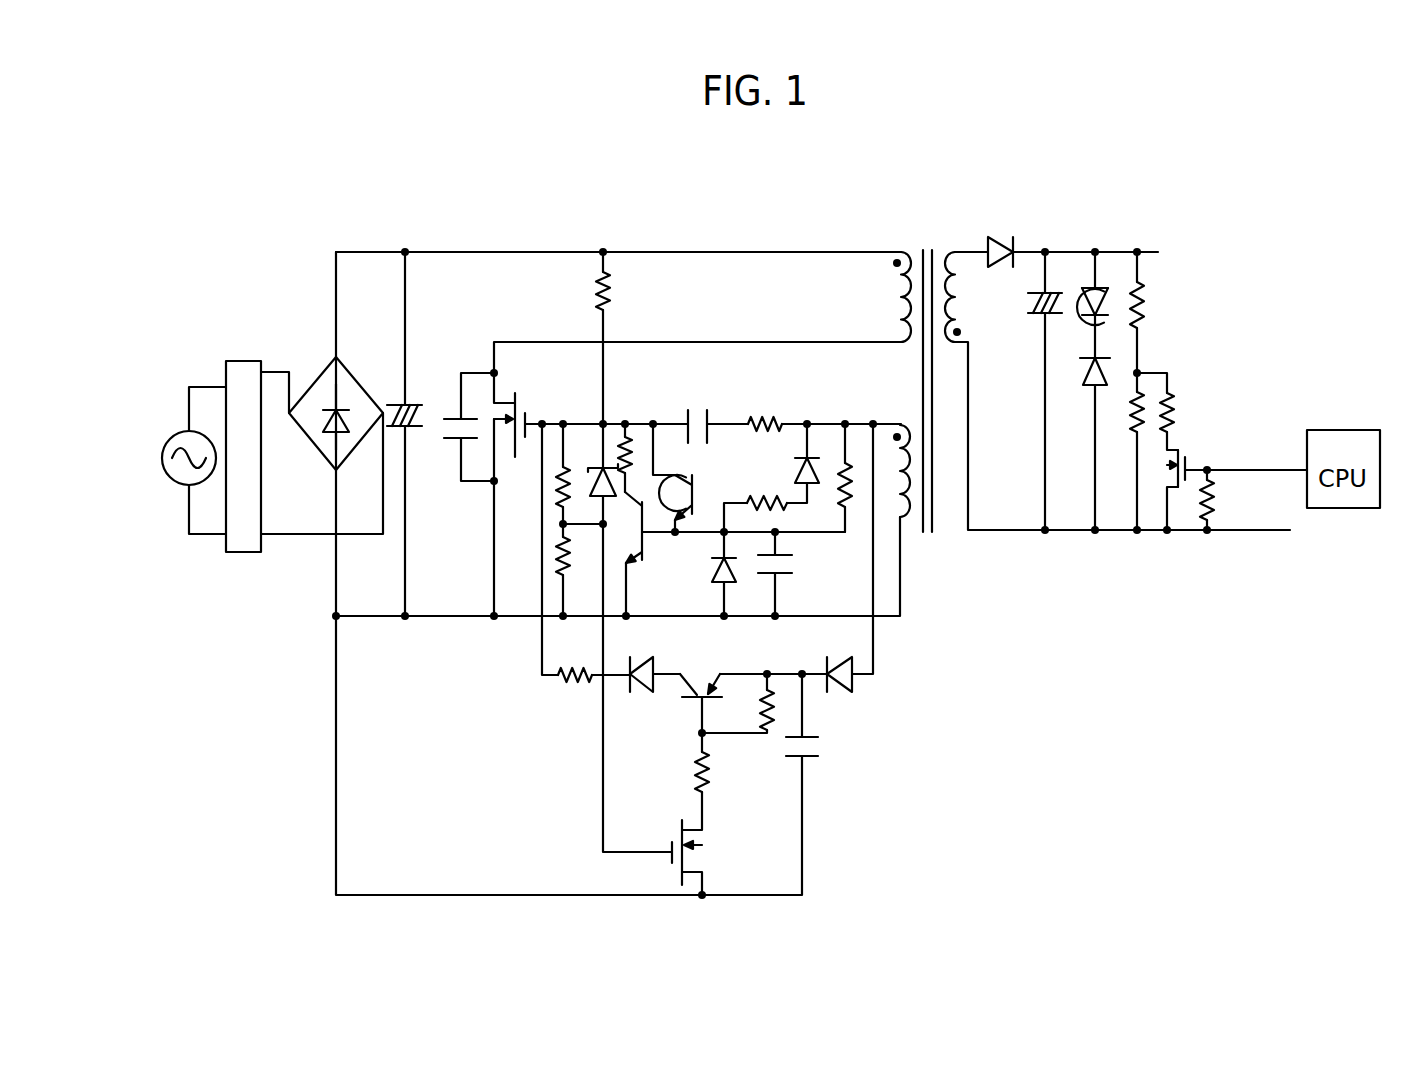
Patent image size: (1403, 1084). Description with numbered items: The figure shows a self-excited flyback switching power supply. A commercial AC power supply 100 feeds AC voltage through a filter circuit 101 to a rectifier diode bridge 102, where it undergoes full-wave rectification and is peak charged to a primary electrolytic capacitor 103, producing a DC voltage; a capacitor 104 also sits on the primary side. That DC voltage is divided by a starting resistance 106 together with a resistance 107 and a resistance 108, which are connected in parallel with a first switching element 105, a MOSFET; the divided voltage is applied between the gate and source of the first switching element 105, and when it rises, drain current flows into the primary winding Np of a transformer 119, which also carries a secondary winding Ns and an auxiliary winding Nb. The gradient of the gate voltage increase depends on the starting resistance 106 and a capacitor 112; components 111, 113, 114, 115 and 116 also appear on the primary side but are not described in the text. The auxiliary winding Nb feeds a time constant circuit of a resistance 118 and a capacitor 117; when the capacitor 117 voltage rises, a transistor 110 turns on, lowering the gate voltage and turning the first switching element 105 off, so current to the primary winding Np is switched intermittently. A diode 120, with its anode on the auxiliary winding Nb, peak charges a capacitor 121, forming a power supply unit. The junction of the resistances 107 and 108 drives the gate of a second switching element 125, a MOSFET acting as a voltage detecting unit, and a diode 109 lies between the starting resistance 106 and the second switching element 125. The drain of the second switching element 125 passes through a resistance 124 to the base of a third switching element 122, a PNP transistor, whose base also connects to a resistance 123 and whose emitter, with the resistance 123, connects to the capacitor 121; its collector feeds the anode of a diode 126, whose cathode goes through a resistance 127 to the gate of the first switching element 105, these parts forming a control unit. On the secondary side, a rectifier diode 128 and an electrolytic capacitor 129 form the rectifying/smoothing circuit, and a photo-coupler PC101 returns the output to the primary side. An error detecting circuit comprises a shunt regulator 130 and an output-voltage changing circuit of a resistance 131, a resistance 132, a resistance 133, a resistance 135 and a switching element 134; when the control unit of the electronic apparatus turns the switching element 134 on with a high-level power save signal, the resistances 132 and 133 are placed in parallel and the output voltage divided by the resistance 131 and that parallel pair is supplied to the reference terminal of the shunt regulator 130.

The commercial AC power supply 100 is at (174, 435).
The filter circuit 101 is at (240, 360).
The rectifier diode bridge 102 is at (312, 378).
The primary electrolytic capacitor 103 is at (412, 403).
The capacitor 104 is at (455, 441).
The first switching element 105 is at (522, 404).
The starting resistance 106 is at (597, 283).
The resistance 107 is at (557, 497).
The resistance 108 is at (557, 553).
The diode 109 is at (594, 466).
The transistor 110 is at (646, 538).
The resistor 111 is at (632, 437).
The capacitor 112 is at (697, 412).
The resistor 113 is at (772, 418).
The diode 114 is at (812, 456).
The resistor 115 is at (774, 500).
The diode 116 is at (712, 580).
The capacitor 117 is at (795, 566).
The resistance 118 is at (852, 465).
The transformer 119 is at (927, 248).
The diode 120 is at (825, 660).
The capacitor 121 is at (822, 745).
The third switching element 122 is at (700, 682).
The resistance 123 is at (782, 710).
The resistance 124 is at (697, 765).
The second switching element 125 is at (705, 844).
The diode 126 is at (636, 662).
The resistance 127 is at (573, 690).
The rectifier diode 128 is at (1020, 235).
The electrolytic capacitor 129 is at (1031, 318).
The shunt regulator 130 is at (1087, 395).
The resistance 131 is at (1147, 294).
The resistance 132 is at (1143, 397).
The resistance 133 is at (1180, 413).
The switching element 134 is at (1187, 455).
The resistance 135 is at (1214, 497).
The photo-coupler PC101 is at (672, 474).